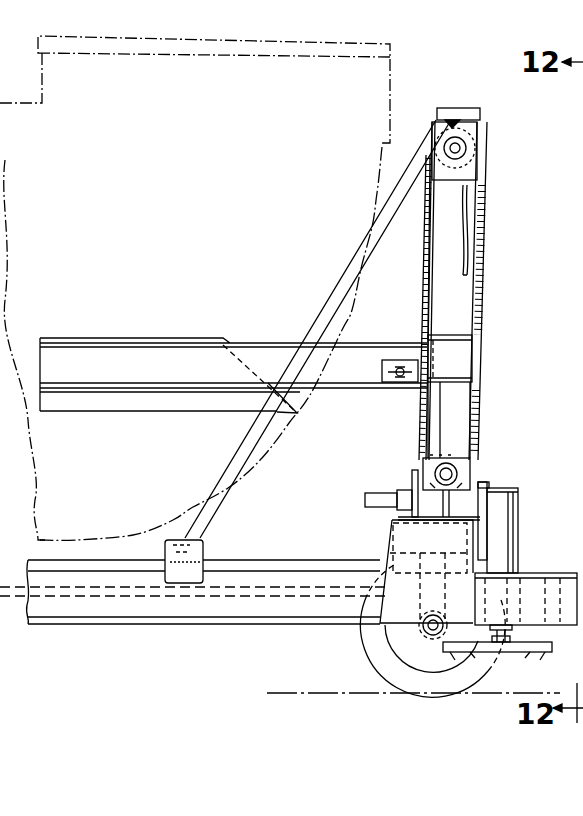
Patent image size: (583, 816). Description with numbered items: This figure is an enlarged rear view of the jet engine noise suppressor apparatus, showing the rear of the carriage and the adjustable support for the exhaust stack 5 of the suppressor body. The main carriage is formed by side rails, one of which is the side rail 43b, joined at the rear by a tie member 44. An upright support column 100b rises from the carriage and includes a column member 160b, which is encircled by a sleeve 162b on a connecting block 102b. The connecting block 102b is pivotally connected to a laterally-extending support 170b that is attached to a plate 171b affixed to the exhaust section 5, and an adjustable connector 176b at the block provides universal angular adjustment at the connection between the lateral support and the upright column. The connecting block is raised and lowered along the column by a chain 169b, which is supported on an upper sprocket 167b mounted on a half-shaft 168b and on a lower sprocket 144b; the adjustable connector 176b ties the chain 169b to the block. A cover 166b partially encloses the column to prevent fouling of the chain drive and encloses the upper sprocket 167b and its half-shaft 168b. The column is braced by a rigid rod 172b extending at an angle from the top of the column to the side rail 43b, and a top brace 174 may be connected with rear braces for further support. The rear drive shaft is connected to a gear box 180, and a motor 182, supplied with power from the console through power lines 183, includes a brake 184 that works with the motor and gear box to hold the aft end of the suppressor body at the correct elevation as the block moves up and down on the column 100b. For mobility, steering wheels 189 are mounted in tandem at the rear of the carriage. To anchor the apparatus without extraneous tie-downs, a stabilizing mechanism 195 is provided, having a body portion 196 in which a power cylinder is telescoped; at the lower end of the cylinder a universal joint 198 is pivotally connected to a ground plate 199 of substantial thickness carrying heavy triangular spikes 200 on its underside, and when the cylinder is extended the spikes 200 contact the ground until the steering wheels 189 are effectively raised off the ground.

The exhaust stack 5 is at (402, 78).
The top brace 174 is at (462, 108).
The half-shaft 168b is at (468, 148).
The upper sprocket 167b is at (478, 172).
The cover 166b is at (468, 238).
The chain 169b is at (422, 287).
The support column 100b is at (421, 309).
The adjustable connector 176b is at (405, 357).
The connecting block 102b is at (487, 334).
The laterally-extending support 170b is at (270, 350).
The plate 171b is at (120, 405).
The sleeve 162b is at (450, 370).
The column member 160b is at (440, 415).
The sprocket 144b is at (458, 455).
The motor 182 is at (378, 492).
The brake 184 is at (395, 517).
The gear box 180 is at (477, 495).
The body portion 196 is at (503, 528).
The stabilizing mechanism 195 is at (528, 546).
The tie member 44 is at (565, 575).
The rigid rod 172b is at (190, 526).
The power lines 183 is at (110, 590).
The side rail 43b is at (263, 613).
The steering wheel 189 is at (372, 655).
The universal joint 198 is at (502, 630).
The ground plate 199 is at (555, 652).
The spike 200 is at (533, 657).